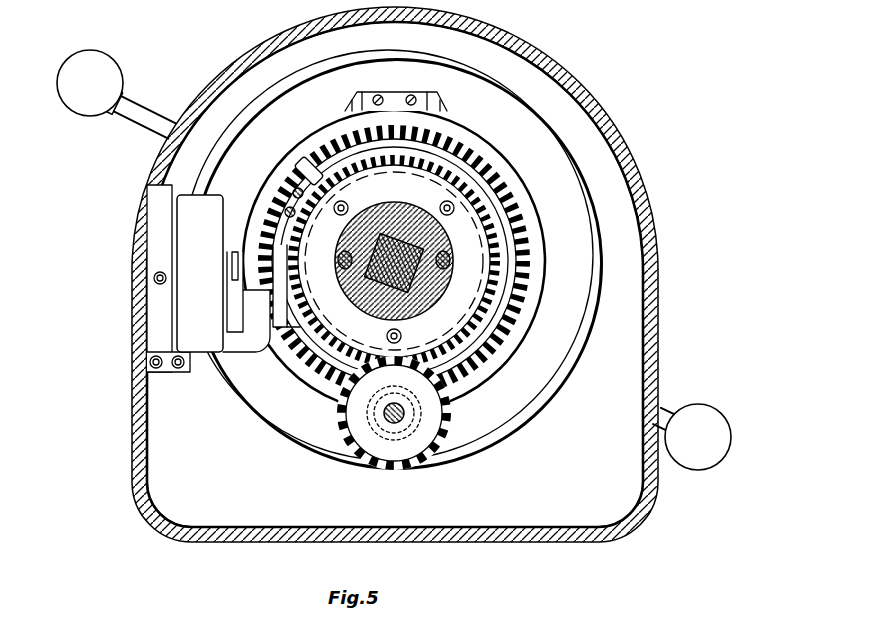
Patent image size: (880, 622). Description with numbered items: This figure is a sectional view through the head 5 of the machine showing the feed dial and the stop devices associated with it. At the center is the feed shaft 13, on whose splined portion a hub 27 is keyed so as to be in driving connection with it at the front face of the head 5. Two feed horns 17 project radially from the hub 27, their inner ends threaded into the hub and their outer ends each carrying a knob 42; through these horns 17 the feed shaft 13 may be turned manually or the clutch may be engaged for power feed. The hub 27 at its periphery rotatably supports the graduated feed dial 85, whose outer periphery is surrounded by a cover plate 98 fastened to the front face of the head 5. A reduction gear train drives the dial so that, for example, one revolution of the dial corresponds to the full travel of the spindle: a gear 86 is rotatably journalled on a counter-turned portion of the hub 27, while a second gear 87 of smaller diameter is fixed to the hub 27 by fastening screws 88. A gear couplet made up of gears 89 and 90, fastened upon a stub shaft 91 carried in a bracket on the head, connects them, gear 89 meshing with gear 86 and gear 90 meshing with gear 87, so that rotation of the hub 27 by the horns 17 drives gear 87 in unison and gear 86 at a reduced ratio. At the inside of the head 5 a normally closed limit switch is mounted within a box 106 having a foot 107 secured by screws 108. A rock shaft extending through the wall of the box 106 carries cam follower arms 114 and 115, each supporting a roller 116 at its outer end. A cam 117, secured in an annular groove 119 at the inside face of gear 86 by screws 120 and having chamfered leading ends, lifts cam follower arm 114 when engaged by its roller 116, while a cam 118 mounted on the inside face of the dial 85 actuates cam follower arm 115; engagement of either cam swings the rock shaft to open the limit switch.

The head 5 is at (580, 72).
The cover plate 98 is at (644, 130).
The feed horns 17 is at (139, 103).
The knob 42 is at (92, 60).
The feed dial 85 is at (493, 150).
The gear 86 is at (519, 316).
The second gear 87 is at (478, 254).
The fastening screws 88 is at (401, 334).
The hub 27 is at (386, 222).
The feed shaft 13 is at (400, 240).
The cam 118 is at (398, 100).
The annular groove 119 is at (314, 172).
The screws 120 is at (296, 190).
The cam 117 is at (288, 208).
The foot 107 is at (150, 330).
The screws 108 is at (166, 374).
The box 106 is at (176, 213).
The cam follower arm 115 is at (240, 312).
The roller 116 is at (234, 252).
The cam follower arm 114 is at (286, 302).
The gear 90 is at (350, 416).
The gear 89 is at (424, 414).
The stub shaft 91 is at (388, 425).